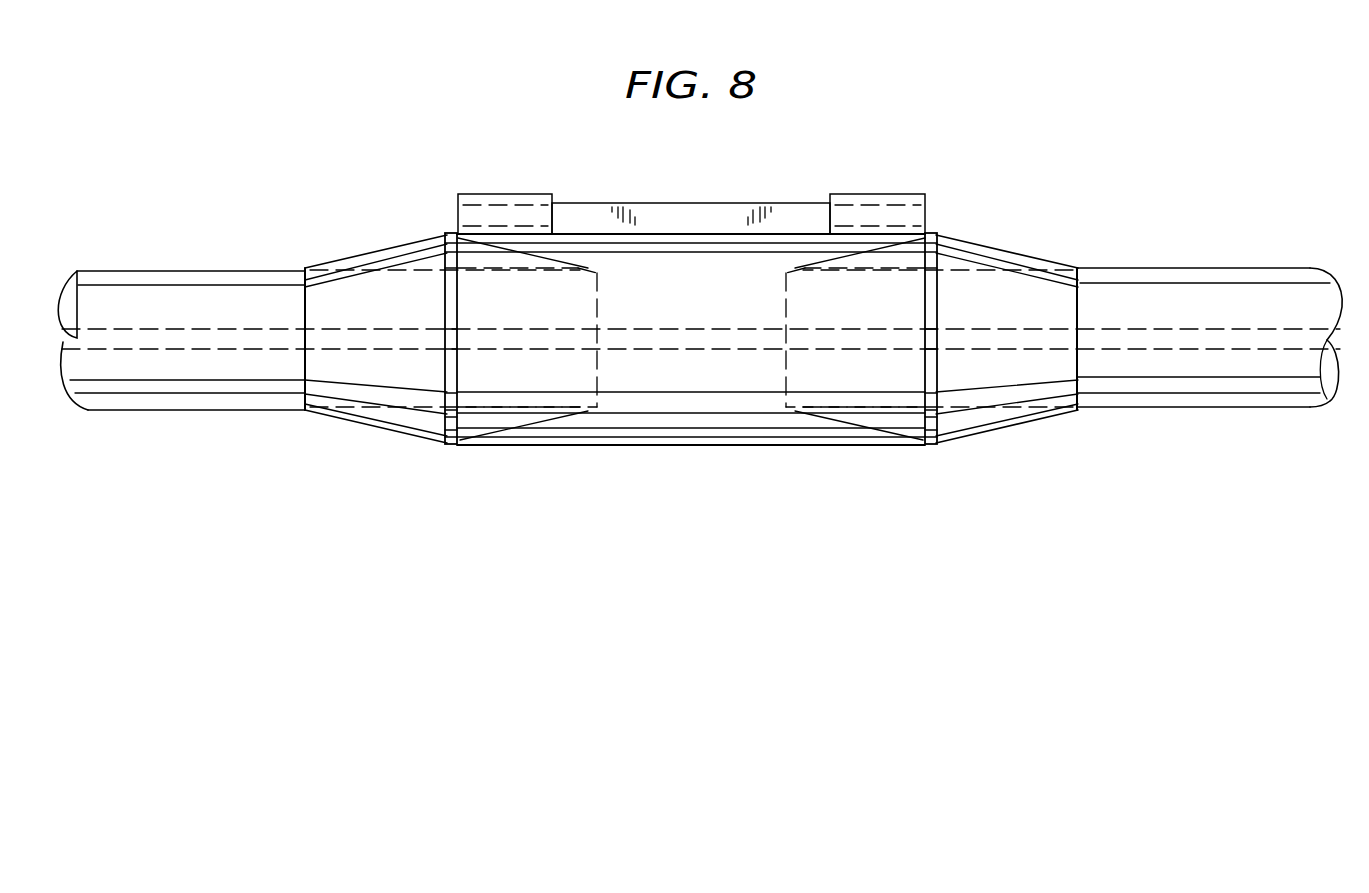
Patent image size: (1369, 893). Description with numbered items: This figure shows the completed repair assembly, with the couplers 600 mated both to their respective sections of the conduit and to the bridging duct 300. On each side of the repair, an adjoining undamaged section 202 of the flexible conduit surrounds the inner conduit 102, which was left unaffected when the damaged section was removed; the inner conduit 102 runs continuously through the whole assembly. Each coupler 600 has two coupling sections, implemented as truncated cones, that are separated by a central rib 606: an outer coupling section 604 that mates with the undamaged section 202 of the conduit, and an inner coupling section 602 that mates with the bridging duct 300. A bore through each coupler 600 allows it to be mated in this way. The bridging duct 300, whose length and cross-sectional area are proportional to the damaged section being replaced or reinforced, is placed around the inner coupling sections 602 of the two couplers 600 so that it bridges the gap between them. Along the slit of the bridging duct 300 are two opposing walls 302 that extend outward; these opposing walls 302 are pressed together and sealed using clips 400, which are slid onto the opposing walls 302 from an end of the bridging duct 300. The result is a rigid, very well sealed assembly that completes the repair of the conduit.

The inner conduit 102 is at (1167, 347).
The undamaged section 202 is at (221, 312).
The bridging duct 300 is at (691, 292).
The opposing walls 302 is at (695, 203).
The clip 400 is at (508, 194).
The coupler 600 is at (691, 374).
The inner coupling section 602 is at (511, 313).
The outer coupling section 604 is at (359, 313).
The central rib 606 is at (455, 447).